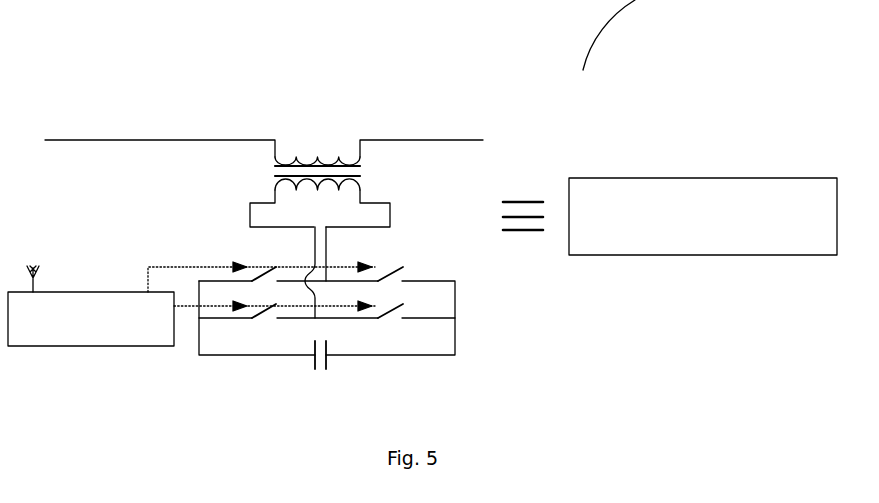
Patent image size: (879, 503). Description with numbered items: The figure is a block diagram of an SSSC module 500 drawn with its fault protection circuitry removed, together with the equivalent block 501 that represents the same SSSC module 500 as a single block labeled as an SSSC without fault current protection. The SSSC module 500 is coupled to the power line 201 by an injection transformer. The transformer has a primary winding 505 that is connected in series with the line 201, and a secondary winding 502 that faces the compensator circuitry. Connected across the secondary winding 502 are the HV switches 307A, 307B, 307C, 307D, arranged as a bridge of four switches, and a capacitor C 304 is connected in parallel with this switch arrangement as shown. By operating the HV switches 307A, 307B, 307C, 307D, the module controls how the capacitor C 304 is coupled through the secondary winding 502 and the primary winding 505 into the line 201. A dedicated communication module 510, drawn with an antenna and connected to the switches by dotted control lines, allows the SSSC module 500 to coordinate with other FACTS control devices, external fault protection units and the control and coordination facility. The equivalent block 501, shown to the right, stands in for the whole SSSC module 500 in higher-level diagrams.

The SSSC module 500 is at (676, 35).
The power line 201 is at (437, 139).
The primary winding 505 is at (308, 152).
The secondary winding 502 is at (323, 196).
The HV switch 307A is at (279, 312).
The HV switch 307B is at (403, 311).
The HV switch 307C is at (274, 279).
The HV switch 307D is at (402, 273).
The capacitor C 304 is at (315, 360).
The dedicated communication module 510 is at (98, 346).
The equivalent block 501 is at (640, 178).